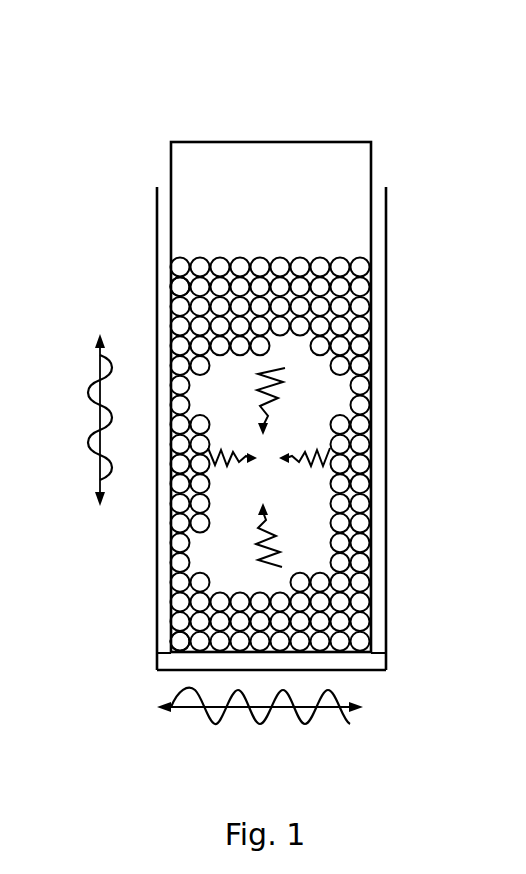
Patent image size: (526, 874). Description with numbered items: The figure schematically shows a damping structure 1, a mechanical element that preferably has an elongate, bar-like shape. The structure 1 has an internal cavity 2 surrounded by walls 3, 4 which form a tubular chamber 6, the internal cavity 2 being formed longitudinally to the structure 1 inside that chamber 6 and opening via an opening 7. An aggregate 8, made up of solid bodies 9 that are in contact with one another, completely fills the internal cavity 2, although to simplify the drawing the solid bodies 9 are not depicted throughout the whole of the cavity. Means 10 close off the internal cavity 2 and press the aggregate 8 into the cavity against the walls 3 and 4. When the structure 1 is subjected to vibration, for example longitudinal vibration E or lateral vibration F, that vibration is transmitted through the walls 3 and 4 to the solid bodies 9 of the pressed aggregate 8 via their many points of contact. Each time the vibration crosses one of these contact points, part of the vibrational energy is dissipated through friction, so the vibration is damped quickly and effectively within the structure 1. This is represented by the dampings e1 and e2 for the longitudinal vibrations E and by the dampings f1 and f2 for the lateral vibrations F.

The damping structure 1 is at (136, 168).
The internal cavity 2 is at (322, 408).
The wall 3 is at (160, 583).
The wall 4 is at (372, 665).
The chamber 6 is at (396, 633).
The opening 7 is at (323, 205).
The aggregate 8 is at (346, 299).
The solid bodies 9 is at (182, 300).
The means for closing off the internal cavity 10 is at (293, 150).
The longitudinal vibration E is at (92, 411).
The lateral vibration F is at (265, 718).
The damping e1 is at (260, 406).
The damping e2 is at (255, 555).
The damping f1 is at (232, 470).
The damping f2 is at (312, 470).